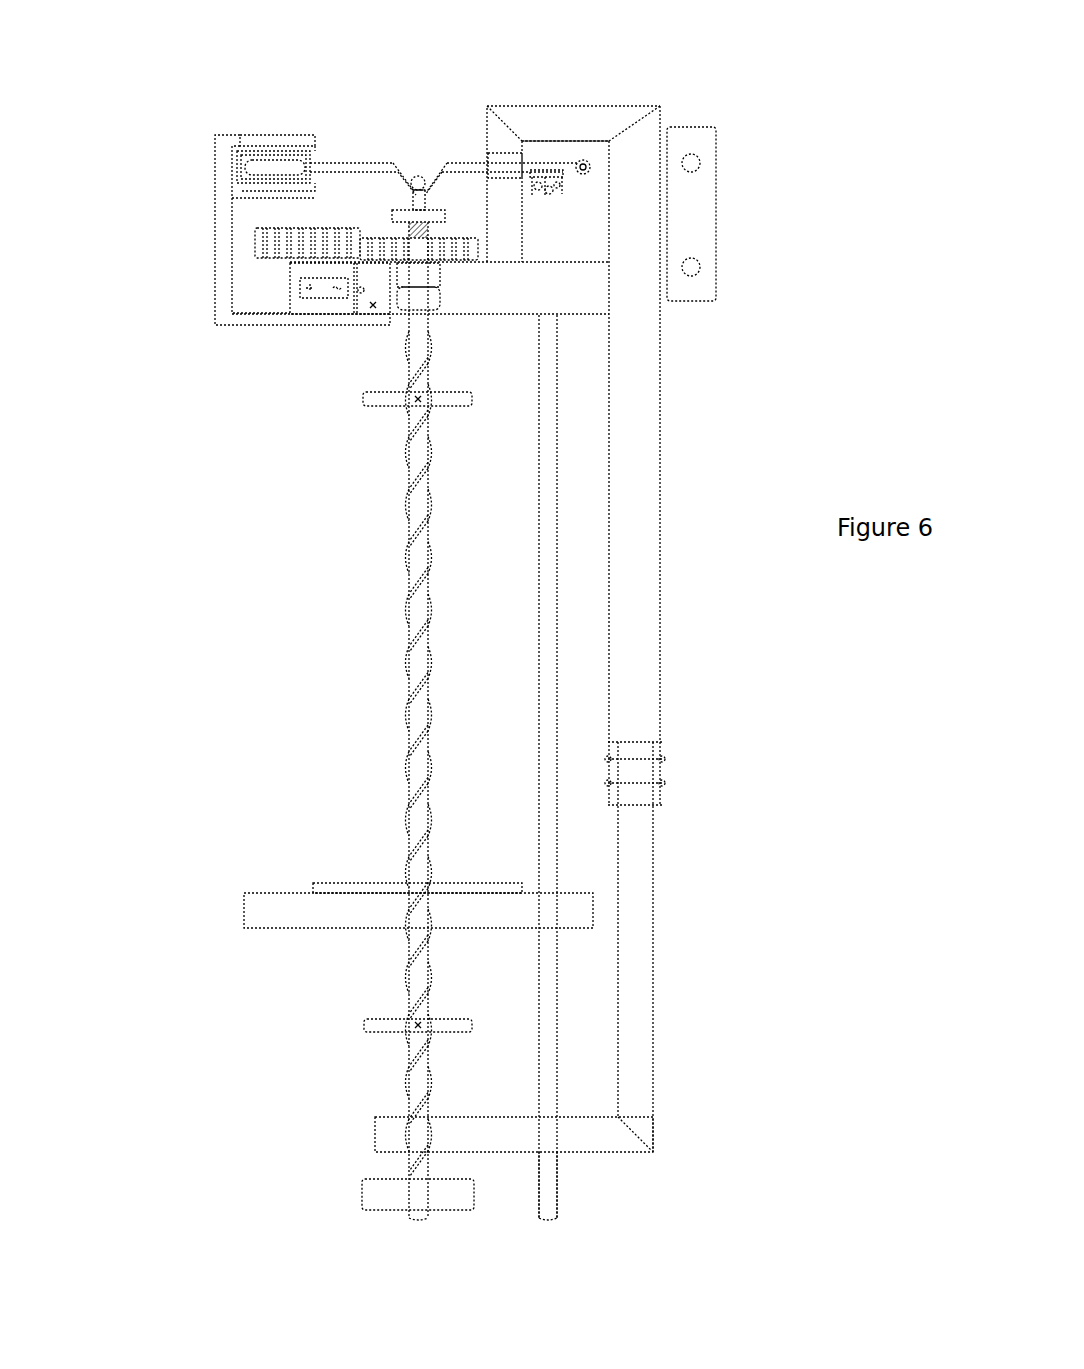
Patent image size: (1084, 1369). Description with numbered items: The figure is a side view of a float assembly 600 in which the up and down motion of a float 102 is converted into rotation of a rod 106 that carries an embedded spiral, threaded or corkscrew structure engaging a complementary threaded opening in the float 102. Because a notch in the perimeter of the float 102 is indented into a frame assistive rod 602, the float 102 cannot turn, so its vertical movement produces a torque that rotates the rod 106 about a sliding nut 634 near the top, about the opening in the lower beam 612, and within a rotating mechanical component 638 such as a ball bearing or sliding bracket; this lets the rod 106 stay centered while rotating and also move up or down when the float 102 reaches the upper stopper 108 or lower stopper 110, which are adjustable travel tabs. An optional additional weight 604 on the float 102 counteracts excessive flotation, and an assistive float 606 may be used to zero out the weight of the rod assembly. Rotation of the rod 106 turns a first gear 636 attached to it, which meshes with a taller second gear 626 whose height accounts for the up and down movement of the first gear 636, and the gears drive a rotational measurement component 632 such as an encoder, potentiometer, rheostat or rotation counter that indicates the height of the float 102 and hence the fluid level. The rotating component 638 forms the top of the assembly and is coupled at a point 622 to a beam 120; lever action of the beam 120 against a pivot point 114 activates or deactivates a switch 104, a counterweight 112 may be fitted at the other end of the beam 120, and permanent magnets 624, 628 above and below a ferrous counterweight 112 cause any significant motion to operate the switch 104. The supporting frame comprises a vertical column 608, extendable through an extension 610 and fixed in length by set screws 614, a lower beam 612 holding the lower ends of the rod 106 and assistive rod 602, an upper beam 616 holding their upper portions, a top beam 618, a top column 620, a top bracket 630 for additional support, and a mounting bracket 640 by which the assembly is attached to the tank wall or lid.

The float assembly 600 is at (822, 258).
The float 102 is at (277, 882).
The switch 104 is at (567, 192).
The rod 106 is at (397, 608).
The upper stopper 108 is at (362, 399).
The lower stopper 110 is at (363, 1026).
The counterweight 112 is at (249, 162).
The pivot point 114 is at (588, 160).
The beam 120 is at (372, 160).
The assistive rod 602 is at (560, 712).
The additional weight 604 is at (373, 882).
The assistive float 606 is at (362, 1195).
The vertical column 608 is at (664, 575).
The extension 610 is at (642, 1039).
The lower beam 612 is at (513, 1155).
The set screw 614 is at (665, 759).
The upper beam 616 is at (587, 318).
The top beam 618 is at (554, 122).
The top column 620 is at (511, 125).
The coupling point 622 is at (417, 172).
The permanent magnet 624 is at (276, 141).
The second gear 626 is at (252, 230).
The permanent magnet 628 is at (239, 187).
The top bracket 630 is at (214, 230).
The rotational measurement component 632 is at (288, 290).
The sliding nut 634 is at (442, 300).
The first gear 636 is at (467, 236).
The rotating mechanical component 638 is at (389, 213).
The mounting bracket 640 is at (718, 213).